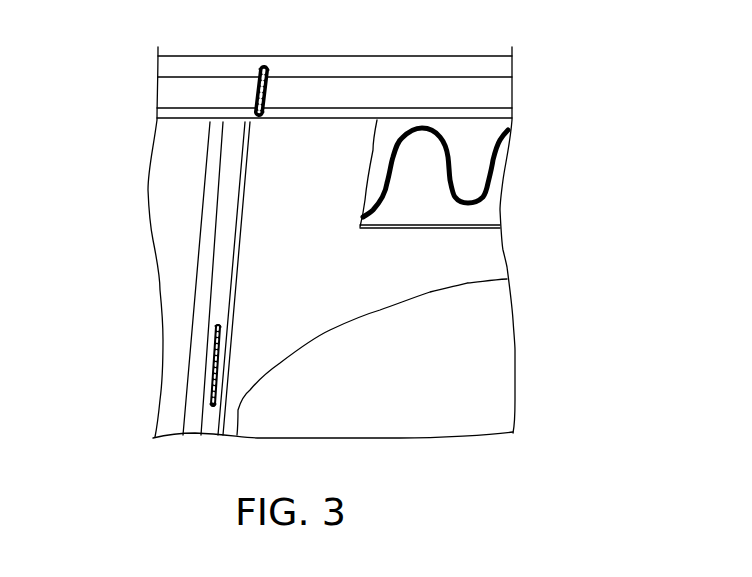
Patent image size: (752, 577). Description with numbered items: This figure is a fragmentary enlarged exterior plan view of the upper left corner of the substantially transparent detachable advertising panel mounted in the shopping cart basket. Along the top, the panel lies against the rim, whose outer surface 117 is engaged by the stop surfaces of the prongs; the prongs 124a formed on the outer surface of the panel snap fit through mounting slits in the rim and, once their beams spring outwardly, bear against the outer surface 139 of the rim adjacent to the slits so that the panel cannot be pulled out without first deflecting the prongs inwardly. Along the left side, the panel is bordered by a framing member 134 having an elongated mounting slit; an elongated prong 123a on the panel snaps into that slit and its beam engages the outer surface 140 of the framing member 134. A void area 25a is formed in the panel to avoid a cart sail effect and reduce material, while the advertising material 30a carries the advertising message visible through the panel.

The outer surface of the rim 117 is at (360, 85).
The outer surface of the rim 139 is at (260, 67).
The prong 124a is at (257, 72).
The void area 25a is at (377, 175).
The framing member 134 is at (225, 248).
The outer surface of the framing member 140 is at (218, 326).
The elongated prong 123a is at (216, 328).
The advertising material 30a is at (478, 300).